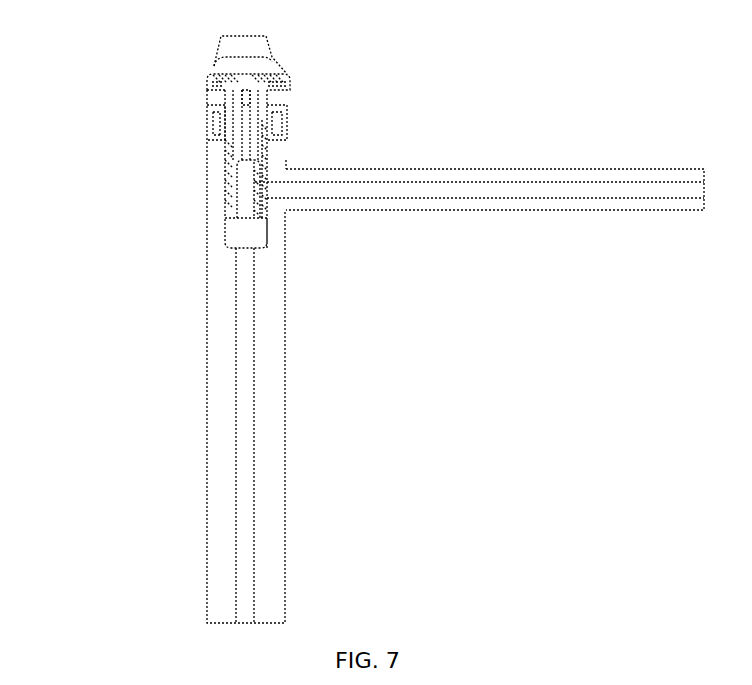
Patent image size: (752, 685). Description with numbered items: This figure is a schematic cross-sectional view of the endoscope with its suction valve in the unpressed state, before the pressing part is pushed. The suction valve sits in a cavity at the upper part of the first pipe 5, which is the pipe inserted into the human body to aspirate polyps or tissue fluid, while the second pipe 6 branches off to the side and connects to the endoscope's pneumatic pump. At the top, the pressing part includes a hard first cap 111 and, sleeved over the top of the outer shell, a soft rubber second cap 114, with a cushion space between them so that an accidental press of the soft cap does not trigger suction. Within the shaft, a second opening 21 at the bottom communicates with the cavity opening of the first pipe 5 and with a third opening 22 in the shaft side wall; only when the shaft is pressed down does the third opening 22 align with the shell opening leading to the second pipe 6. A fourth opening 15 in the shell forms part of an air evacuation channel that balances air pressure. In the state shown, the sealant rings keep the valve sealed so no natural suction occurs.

The first pipe 5 is at (220, 440).
The second pipe 6 is at (455, 200).
The fourth opening 15 is at (232, 190).
The second opening 21 is at (243, 213).
The third opening 22 is at (286, 162).
The first cap 111 is at (205, 73).
The second cap 114 is at (270, 38).